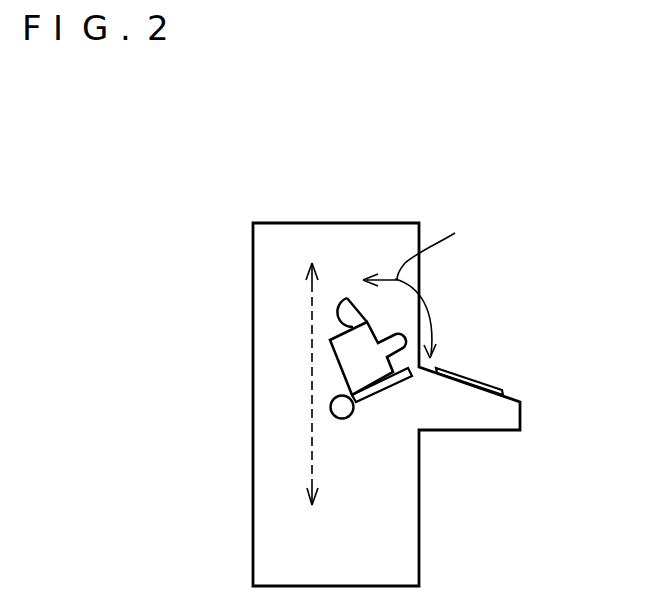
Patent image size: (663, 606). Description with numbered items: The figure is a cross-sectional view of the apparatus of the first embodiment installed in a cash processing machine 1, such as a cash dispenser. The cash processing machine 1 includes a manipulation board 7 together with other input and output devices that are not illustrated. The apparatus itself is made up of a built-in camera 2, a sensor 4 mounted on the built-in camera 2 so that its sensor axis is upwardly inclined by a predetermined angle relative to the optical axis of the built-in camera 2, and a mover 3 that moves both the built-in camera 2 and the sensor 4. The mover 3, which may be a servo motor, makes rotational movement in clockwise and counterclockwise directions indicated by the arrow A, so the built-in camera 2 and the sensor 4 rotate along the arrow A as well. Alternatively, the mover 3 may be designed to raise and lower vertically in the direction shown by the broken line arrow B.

The cash processing machine 1 is at (512, 398).
The built-in camera 2 is at (333, 357).
The mover 3 is at (338, 406).
The sensor 4 is at (338, 312).
The manipulation board 7 is at (488, 383).
The arrow A is at (420, 288).
The broken line arrow B is at (308, 468).